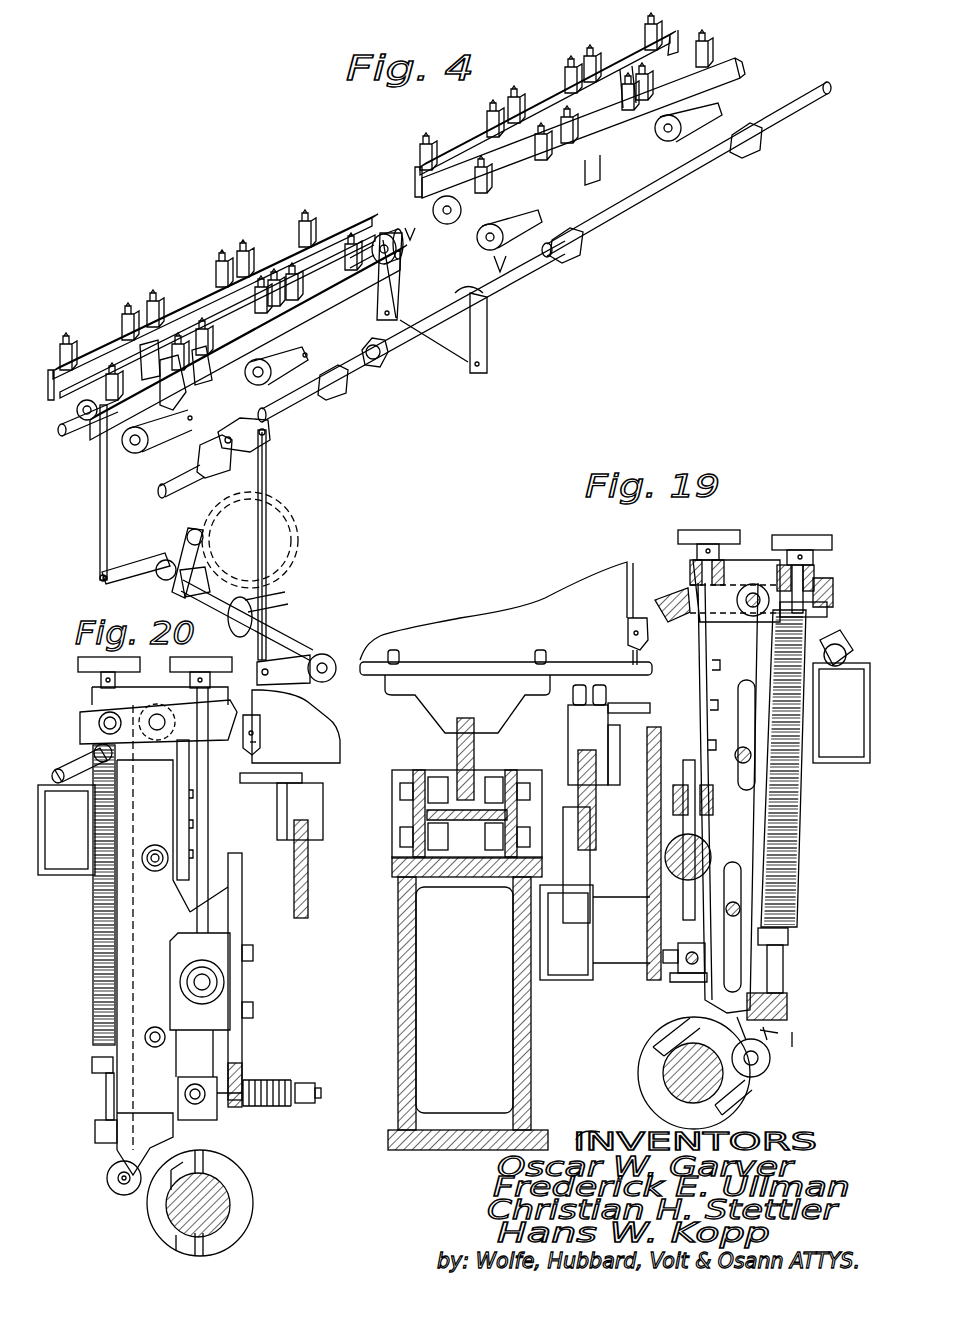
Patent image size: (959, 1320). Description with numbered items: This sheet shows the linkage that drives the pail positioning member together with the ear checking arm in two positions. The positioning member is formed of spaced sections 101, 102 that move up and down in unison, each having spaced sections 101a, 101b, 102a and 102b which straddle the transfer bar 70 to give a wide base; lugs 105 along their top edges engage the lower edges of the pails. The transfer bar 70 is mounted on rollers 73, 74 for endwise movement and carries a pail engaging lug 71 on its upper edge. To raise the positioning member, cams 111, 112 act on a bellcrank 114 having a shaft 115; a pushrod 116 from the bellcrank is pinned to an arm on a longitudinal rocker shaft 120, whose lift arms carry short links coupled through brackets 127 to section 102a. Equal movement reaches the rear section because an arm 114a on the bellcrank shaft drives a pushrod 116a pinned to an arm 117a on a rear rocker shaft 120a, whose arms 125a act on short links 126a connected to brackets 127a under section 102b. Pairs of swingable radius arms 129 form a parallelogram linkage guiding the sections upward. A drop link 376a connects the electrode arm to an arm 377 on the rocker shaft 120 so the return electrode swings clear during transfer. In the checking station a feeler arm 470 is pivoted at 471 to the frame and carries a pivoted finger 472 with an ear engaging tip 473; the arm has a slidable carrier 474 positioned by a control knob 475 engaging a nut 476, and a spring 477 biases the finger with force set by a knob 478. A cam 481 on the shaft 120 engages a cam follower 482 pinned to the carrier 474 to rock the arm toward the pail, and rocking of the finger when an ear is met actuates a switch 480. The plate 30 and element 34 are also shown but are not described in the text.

In FIG. 4, the section of positioning member 101 is at (580, 105).
In FIG. 4, the spaced section 101a is at (468, 148).
In FIG. 4, the spaced section 101b is at (583, 143).
In FIG. 4, the lugs 105 is at (110, 368).
In FIG. 20, the lugs 105 is at (284, 806).
In FIG. 19, the lugs 105 is at (568, 740).
In FIG. 4, the section of positioning member 102 is at (288, 240).
In FIG. 4, the spaced section 102a is at (323, 245).
In FIG. 19, the spaced section 102a is at (592, 798).
In FIG. 4, the spaced section 102b is at (338, 283).
In FIG. 20, the spaced section 102b is at (300, 918).
In FIG. 4, the drop link 376a is at (408, 238).
In FIG. 4, the arm 377 is at (398, 247).
In FIG. 4, the brackets 127 is at (162, 356).
In FIG. 4, the brackets 127a is at (188, 384).
In FIG. 4, the short links 126a is at (236, 414).
In FIG. 4, the swingable radius arms 129 is at (150, 460).
In FIG. 4, the cam 481 is at (392, 364).
In FIG. 20, the cam 481 is at (150, 1212).
In FIG. 19, the cam 481 is at (752, 1080).
In FIG. 4, the arms 125a is at (350, 390).
In FIG. 4, the rocker shaft 120a is at (300, 403).
In FIG. 20, the rocker shaft 120a is at (175, 1222).
In FIG. 4, the rocker shaft 120 is at (70, 440).
In FIG. 19, the rocker shaft 120 is at (652, 1100).
In FIG. 4, the arm 117a is at (270, 458).
In FIG. 4, the pushrod 116a is at (270, 482).
In FIG. 4, the cam 111 is at (212, 512).
In FIG. 4, the cam 112 is at (305, 515).
In FIG. 4, the pushrod 116 is at (99, 522).
In FIG. 4, the bellcrank 114 is at (135, 560).
In FIG. 4, the bellcrank shaft 115 is at (254, 614).
In FIG. 4, the arm 114a is at (303, 657).
In FIG. 20, the knob 478 is at (84, 670).
In FIG. 19, the knob 478 is at (818, 542).
In FIG. 20, the control knob 475 is at (174, 667).
In FIG. 19, the control knob 475 is at (724, 540).
In FIG. 20, the pivoted finger 472 is at (80, 728).
In FIG. 19, the pivoted finger 472 is at (826, 612).
In FIG. 20, the ear engaging tip 473 is at (258, 714).
In FIG. 19, the ear engaging tip 473 is at (668, 602).
In FIG. 20, the clip 34 is at (270, 751).
In FIG. 19, the clip 34 is at (654, 641).
In FIG. 20, the plate 30 is at (326, 744).
In FIG. 19, the plate 30 is at (562, 600).
In FIG. 20, the switch 480 is at (70, 868).
In FIG. 19, the switch 480 is at (845, 757).
In FIG. 20, the spring 477 is at (96, 965).
In FIG. 19, the spring 477 is at (798, 857).
In FIG. 20, the carrier 474 is at (123, 998).
In FIG. 19, the carrier 474 is at (696, 980).
In FIG. 20, the nut 476 is at (224, 982).
In FIG. 19, the nut 476 is at (670, 862).
In FIG. 20, the cam follower 482 is at (113, 1186).
In FIG. 19, the cam follower 482 is at (770, 1062).
In FIG. 19, the pivot 471 is at (660, 846).
In FIG. 19, the feeler arm 470 is at (728, 685).
In FIG. 19, the pail engaging lug 71 is at (432, 703).
In FIG. 19, the transfer member bar 70 is at (460, 745).
In FIG. 19, the roller 73 is at (478, 790).
In FIG. 19, the roller 74 is at (485, 855).